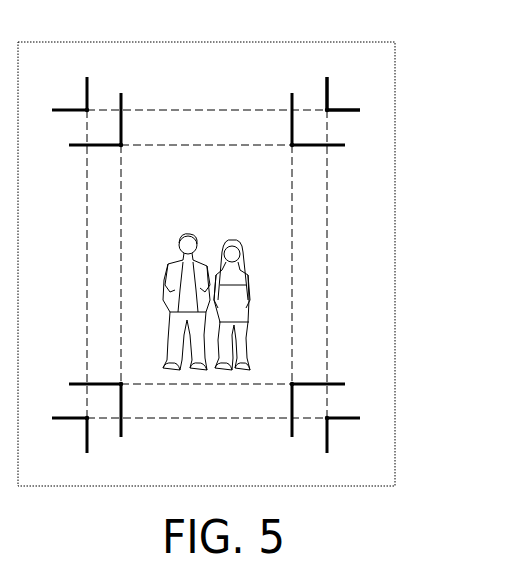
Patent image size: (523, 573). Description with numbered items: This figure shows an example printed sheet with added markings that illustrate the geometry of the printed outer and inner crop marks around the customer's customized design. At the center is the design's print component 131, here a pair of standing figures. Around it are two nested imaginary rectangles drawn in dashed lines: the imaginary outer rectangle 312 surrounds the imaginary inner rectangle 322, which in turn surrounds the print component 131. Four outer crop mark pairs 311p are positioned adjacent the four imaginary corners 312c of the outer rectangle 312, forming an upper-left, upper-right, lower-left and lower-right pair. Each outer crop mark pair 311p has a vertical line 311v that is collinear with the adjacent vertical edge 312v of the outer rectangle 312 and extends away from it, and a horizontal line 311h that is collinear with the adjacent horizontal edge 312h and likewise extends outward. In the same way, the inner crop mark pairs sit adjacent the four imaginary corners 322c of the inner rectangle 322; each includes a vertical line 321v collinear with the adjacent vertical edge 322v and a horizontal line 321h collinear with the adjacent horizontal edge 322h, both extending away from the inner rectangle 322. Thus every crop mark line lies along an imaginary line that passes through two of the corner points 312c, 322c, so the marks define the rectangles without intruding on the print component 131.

The print component 131 is at (257, 307).
The outer crop mark pair 311p is at (287, 102).
The vertical line of outer crop mark pair 311v is at (328, 80).
The horizontal line of outer crop mark pair 311h is at (353, 112).
The imaginary outer rectangle 312 is at (327, 265).
The imaginary corner of outer rectangle 312c is at (328, 112).
The horizontal edge of outer rectangle 312h is at (153, 110).
The vertical edge of outer rectangle 312v is at (327, 348).
The vertical line of inner crop mark pair 321v is at (294, 108).
The horizontal line of inner crop mark pair 321h is at (323, 146).
The imaginary inner rectangle 322 is at (293, 285).
The imaginary corner of inner rectangle 322c is at (293, 146).
The horizontal edge of inner rectangle 322h is at (207, 145).
The vertical edge of inner rectangle 322v is at (293, 358).